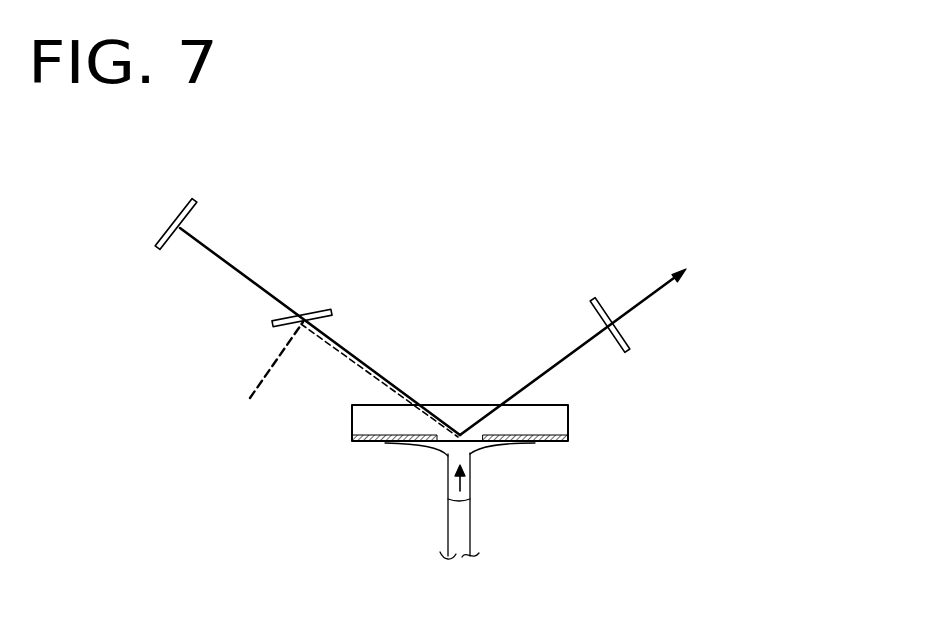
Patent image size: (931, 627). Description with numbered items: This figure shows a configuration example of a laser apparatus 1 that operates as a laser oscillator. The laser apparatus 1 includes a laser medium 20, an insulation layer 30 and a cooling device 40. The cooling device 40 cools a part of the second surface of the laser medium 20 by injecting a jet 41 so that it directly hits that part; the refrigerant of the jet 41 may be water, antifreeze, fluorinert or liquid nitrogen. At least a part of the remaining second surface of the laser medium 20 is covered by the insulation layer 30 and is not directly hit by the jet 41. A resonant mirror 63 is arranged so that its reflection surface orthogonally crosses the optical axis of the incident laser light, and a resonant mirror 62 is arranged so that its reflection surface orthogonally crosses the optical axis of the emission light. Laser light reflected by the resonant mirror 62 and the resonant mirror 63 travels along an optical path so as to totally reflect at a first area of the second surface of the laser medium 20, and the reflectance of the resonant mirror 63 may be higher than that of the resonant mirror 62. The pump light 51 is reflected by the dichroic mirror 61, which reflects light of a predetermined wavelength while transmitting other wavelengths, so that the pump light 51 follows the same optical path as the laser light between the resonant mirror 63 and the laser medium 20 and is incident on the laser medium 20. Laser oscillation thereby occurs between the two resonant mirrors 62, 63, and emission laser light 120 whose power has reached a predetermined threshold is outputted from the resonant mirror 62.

The laser apparatus 1 is at (638, 187).
The laser medium 20 is at (568, 418).
The insulation layer 30 is at (473, 453).
The cooling device 40 is at (466, 557).
The jet 41 is at (470, 490).
The pump light 51 is at (249, 397).
The dichroic mirror 61 is at (330, 311).
The resonant mirror 62 is at (627, 348).
The resonant mirror 63 is at (190, 206).
The emission laser light 120 is at (690, 300).